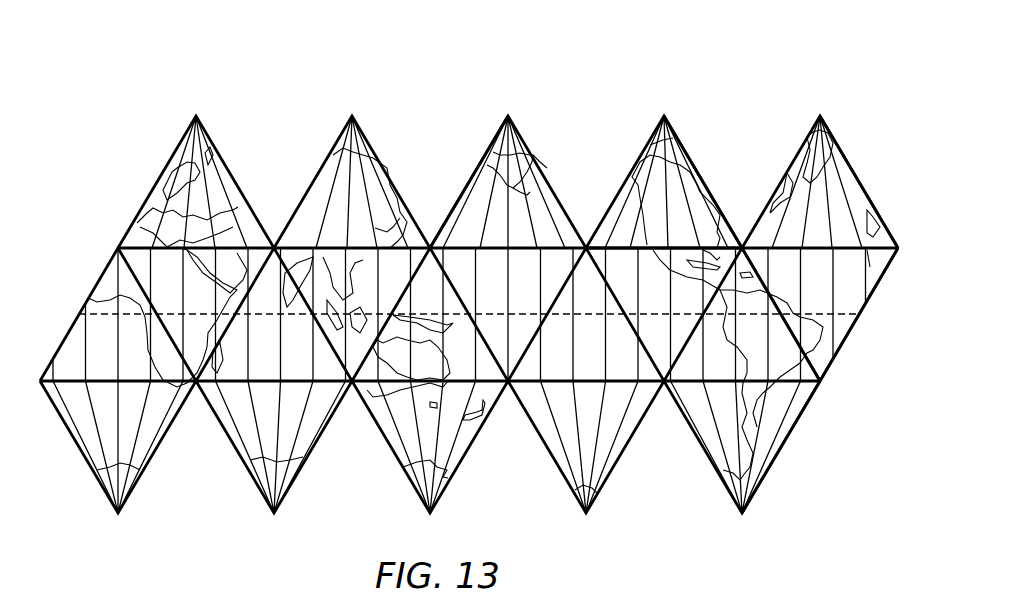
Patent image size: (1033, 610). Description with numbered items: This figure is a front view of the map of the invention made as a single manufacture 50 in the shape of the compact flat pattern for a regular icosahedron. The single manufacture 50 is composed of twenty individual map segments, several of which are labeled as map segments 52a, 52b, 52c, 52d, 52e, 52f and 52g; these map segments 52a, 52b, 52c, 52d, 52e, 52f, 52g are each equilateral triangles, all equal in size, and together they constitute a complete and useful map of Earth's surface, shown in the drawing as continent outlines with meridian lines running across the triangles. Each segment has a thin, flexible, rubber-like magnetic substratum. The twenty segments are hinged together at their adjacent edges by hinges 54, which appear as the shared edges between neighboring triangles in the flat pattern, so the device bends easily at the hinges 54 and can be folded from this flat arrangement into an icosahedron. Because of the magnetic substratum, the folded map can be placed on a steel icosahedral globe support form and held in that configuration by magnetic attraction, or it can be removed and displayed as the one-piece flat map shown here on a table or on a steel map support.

The single manufacture 50 is at (470, 284).
The map segment 52a is at (681, 148).
The map segment 52b is at (833, 147).
The map segment 52c is at (630, 248).
The map segment 52d is at (828, 347).
The map segment 52e is at (782, 372).
The map segment 52f is at (770, 460).
The map segment 52g is at (477, 170).
The hinges 54 is at (225, 243).